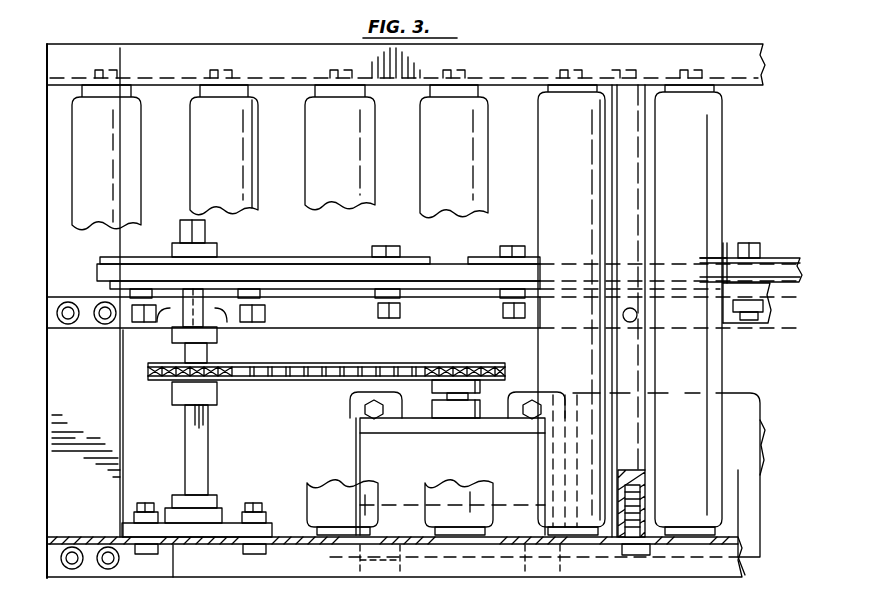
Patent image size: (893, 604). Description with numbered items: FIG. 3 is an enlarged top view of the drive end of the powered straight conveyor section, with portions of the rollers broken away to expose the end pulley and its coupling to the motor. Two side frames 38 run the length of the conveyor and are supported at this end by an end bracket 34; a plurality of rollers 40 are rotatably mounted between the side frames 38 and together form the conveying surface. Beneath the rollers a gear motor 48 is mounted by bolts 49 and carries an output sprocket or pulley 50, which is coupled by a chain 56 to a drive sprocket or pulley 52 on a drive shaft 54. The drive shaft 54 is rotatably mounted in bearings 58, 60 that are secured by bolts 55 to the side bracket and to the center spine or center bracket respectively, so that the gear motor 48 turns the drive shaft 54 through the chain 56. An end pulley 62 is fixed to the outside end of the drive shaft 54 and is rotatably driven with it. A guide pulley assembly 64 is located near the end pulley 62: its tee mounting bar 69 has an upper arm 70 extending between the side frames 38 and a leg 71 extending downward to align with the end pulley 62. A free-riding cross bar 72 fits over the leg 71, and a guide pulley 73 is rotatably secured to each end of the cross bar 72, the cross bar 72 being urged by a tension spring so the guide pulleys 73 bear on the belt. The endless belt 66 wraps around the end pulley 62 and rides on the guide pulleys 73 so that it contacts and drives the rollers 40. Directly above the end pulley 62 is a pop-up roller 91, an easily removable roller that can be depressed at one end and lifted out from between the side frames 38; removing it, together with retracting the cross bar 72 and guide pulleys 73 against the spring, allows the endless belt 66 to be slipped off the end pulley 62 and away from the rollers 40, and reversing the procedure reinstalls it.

The end bracket 34 is at (117, 452).
The side frame 38 is at (292, 52).
The roller 40 is at (134, 157).
The gear motor 48 is at (762, 393).
The bolt 49 is at (366, 410).
The output sprocket or pulley 50 is at (474, 368).
The drive sprocket or pulley 52 is at (165, 387).
The drive shaft 54 is at (204, 443).
The bolt 55 is at (140, 330).
The chain 56 is at (284, 382).
The bearing 58 is at (223, 510).
The bearing 60 is at (220, 338).
The end pulley 62 is at (272, 262).
The guide pulley assembly 64 is at (765, 239).
The endless belt 66 is at (318, 262).
The tee mounting bar 69 is at (658, 362).
The upper arm 70 is at (636, 195).
The leg 71 is at (627, 322).
The cross bar 72 is at (534, 305).
The guide pulley 73 is at (486, 262).
The pop-up roller 91 is at (236, 203).